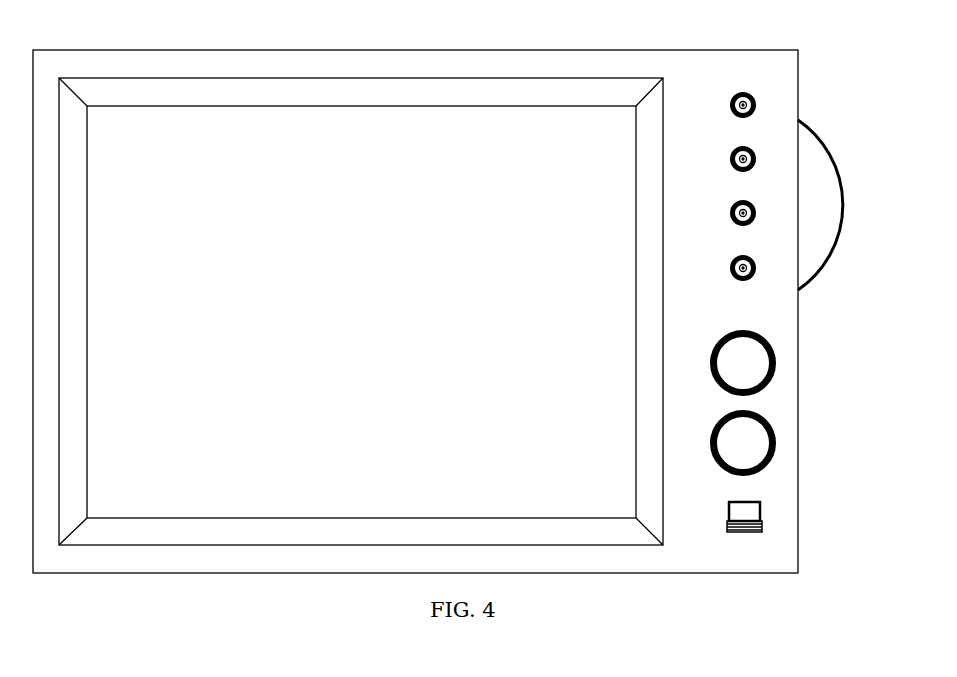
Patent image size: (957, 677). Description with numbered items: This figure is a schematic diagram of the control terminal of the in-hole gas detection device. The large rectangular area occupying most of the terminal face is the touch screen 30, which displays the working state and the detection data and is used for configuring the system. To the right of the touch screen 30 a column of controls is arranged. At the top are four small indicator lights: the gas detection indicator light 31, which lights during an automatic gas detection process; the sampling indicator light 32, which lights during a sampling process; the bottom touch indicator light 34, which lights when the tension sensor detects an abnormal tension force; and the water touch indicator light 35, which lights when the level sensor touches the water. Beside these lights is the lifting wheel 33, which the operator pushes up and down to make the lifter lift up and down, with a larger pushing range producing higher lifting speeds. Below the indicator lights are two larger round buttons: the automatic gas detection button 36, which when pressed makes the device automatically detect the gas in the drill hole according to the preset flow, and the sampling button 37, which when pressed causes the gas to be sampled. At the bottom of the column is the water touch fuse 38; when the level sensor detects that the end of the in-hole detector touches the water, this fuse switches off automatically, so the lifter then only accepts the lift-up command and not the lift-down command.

The touch screen 30 is at (443, 122).
The gas detection indicator light 31 is at (755, 100).
The sampling indicator light 32 is at (755, 155).
The lifting wheel 33 is at (825, 187).
The bottom touch indicator light 34 is at (756, 218).
The water touch indicator light 35 is at (756, 272).
The automatic gas detection button 36 is at (775, 367).
The sampling button 37 is at (775, 447).
The water touch fuse 38 is at (761, 512).